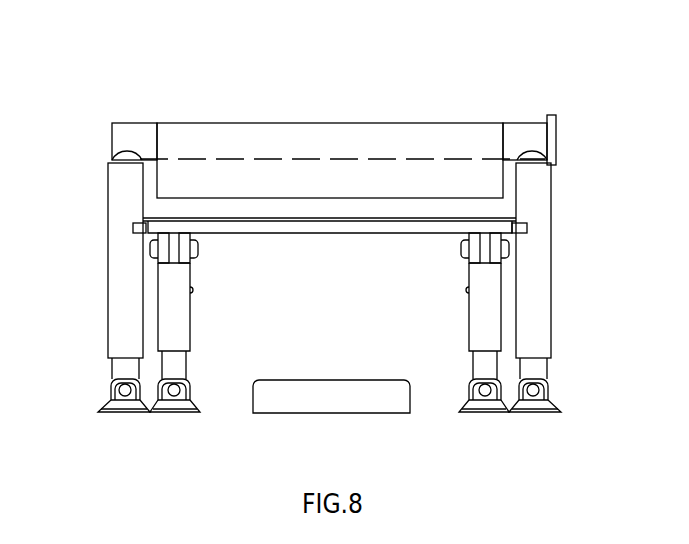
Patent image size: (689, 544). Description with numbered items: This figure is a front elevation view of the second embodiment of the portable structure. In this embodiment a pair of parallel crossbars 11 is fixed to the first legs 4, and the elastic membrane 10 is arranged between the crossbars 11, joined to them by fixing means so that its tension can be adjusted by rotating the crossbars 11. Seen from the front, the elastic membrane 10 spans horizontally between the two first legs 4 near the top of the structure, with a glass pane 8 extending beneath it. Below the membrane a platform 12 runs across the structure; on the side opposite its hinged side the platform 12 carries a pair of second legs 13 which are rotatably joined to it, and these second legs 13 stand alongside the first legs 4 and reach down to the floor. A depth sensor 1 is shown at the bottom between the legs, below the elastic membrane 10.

The depth sensor 1 is at (342, 403).
The first legs 4 is at (91, 245).
The glass pane 8 is at (430, 215).
The elastic membrane 10 is at (362, 185).
The crossbar 11 is at (146, 123).
The platform 12 is at (391, 228).
The second legs 13 is at (140, 318).